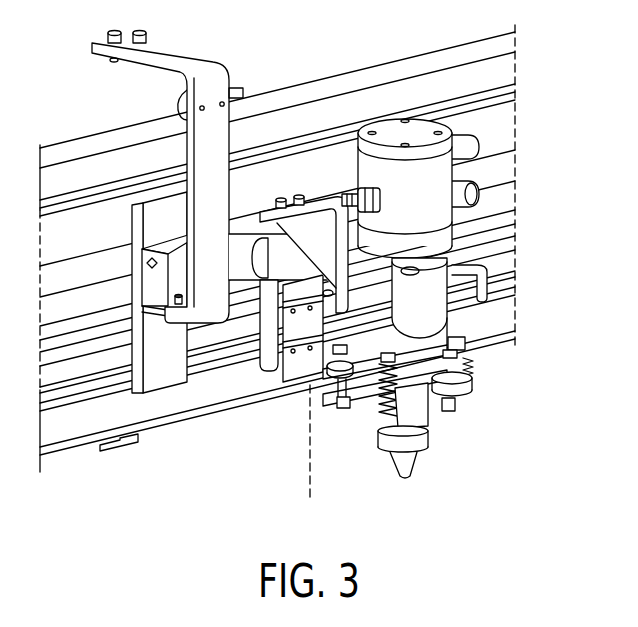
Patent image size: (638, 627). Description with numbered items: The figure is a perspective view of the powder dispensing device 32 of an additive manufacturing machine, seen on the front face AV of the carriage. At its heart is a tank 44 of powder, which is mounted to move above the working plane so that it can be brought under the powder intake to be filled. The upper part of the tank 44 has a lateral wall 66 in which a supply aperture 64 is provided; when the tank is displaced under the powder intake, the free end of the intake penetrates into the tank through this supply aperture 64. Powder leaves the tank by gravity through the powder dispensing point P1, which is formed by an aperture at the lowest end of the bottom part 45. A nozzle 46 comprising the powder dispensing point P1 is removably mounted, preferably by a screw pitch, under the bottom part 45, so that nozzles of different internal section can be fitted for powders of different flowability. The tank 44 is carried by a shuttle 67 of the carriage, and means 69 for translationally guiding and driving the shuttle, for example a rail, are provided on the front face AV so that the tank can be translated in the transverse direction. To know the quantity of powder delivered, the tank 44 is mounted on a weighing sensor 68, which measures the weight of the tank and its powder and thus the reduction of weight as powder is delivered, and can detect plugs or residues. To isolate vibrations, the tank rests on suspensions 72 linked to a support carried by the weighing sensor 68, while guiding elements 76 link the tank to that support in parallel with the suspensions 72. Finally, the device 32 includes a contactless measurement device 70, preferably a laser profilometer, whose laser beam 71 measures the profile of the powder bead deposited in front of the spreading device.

The powder dispensing device 32 is at (523, 97).
The front face AV is at (497, 107).
The tank 44 is at (453, 332).
The bottom part 45 is at (412, 412).
The nozzle 46 is at (403, 463).
The supply aperture 64 is at (430, 297).
The lateral wall 66 is at (462, 350).
The shuttle 67 is at (157, 372).
The weighing sensor 68 is at (248, 232).
The means for translationally guiding and driving the shuttle 69 is at (70, 395).
The contactless measurement device 70 is at (284, 356).
The laser beam 71 is at (308, 478).
The suspensions 72 is at (382, 408).
The guiding elements 76 is at (470, 380).
The powder dispensing point P1 is at (427, 497).